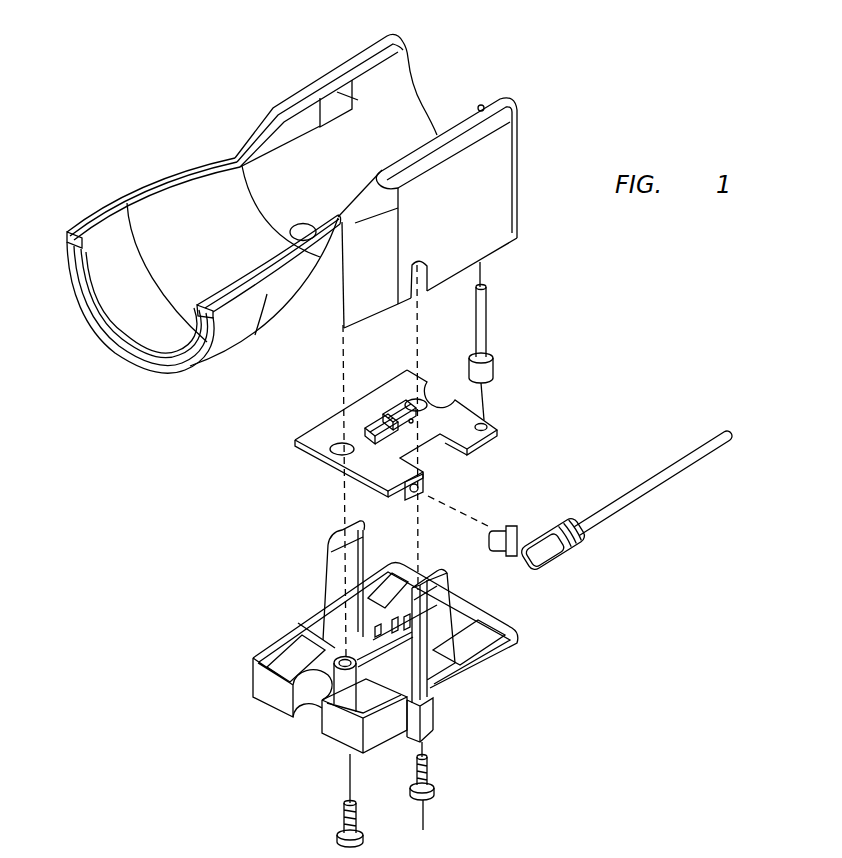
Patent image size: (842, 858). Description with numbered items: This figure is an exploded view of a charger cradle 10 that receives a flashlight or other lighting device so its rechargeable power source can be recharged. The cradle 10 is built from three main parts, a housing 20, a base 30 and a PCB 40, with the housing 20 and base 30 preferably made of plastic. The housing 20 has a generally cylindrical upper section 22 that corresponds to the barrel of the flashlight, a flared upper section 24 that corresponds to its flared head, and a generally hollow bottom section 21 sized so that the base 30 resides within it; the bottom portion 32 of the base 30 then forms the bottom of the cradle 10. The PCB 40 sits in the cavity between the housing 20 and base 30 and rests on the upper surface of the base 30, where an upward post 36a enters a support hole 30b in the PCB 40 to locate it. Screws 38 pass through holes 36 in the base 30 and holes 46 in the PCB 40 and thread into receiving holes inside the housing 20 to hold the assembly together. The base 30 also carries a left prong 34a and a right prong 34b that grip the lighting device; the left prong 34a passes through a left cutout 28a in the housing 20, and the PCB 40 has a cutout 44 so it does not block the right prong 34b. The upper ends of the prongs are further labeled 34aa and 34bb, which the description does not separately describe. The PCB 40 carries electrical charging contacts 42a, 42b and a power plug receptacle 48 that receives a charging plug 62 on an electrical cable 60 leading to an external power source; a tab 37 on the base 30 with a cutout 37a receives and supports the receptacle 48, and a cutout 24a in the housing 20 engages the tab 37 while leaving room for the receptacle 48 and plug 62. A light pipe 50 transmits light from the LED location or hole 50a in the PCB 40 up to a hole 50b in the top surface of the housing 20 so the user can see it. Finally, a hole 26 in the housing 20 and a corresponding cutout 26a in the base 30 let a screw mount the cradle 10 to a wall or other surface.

The charger cradle 10 is at (637, 297).
The housing 20 is at (320, 74).
The bottom section 21 is at (515, 243).
The cylindrical upper section 22 is at (374, 41).
The flared upper section 24 is at (126, 198).
The cutout 24a is at (419, 289).
The hole 26 is at (302, 228).
The cutout 26a is at (310, 720).
The left cutout 28a is at (414, 76).
The base 30 is at (250, 684).
The support hole 30b is at (362, 421).
The bottom portion 32 is at (263, 708).
The left prong 34a is at (327, 580).
The first post tip 34aa is at (327, 553).
The right prong 34b is at (450, 602).
The second post tip 34bb is at (442, 568).
The holes 36 is at (288, 645).
The upward post 36a is at (474, 670).
The tab 37 is at (428, 736).
The cutout 37a is at (434, 716).
The screws 38 is at (362, 834).
The PCB 40 is at (294, 447).
The electrical charging contact 42a is at (370, 417).
The electrical charging contact 42b is at (385, 402).
The cutout 44 is at (462, 463).
The holes 46 is at (331, 448).
The power plug receptacle 48 is at (424, 490).
The light pipe 50 is at (487, 330).
The LED location or hole 50a is at (489, 427).
The hole 50b is at (486, 103).
The electrical cable 60 is at (670, 484).
The charging plug 62 is at (505, 532).